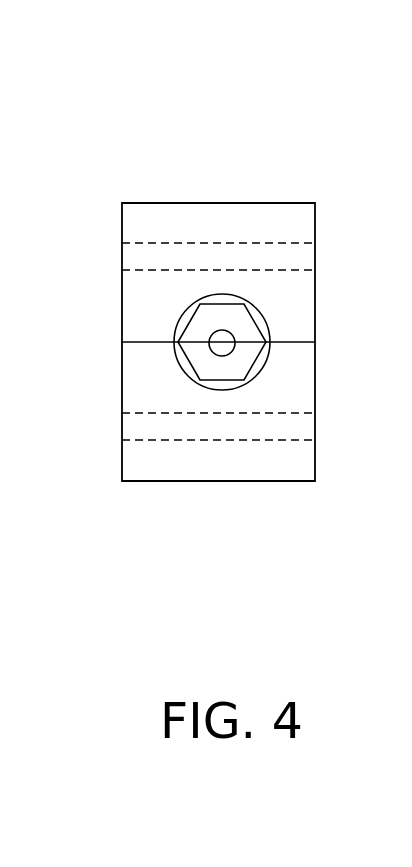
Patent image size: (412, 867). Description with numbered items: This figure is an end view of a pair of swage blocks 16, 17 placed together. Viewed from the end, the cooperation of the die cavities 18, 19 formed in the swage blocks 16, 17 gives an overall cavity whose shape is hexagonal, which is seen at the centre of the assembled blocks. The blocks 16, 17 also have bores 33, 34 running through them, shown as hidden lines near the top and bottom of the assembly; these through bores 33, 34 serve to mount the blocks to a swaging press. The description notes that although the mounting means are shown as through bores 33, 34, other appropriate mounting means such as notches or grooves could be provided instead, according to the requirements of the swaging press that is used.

The swage block 16 is at (278, 227).
The swage block 17 is at (280, 392).
The die cavity 18 is at (222, 316).
The die cavity 19 is at (220, 367).
The bore 33 is at (170, 253).
The bore 34 is at (163, 428).